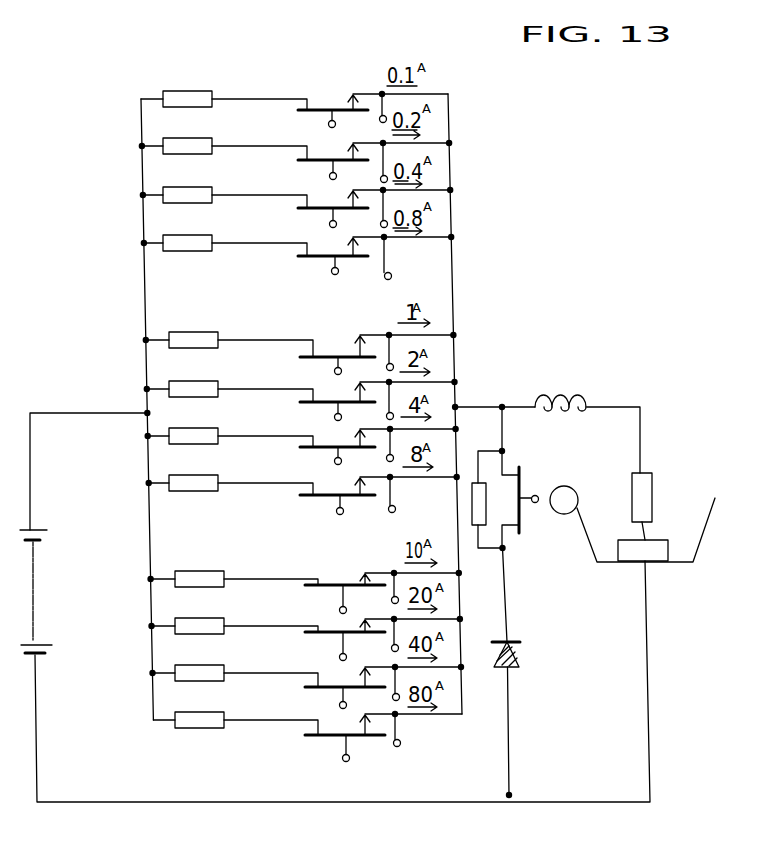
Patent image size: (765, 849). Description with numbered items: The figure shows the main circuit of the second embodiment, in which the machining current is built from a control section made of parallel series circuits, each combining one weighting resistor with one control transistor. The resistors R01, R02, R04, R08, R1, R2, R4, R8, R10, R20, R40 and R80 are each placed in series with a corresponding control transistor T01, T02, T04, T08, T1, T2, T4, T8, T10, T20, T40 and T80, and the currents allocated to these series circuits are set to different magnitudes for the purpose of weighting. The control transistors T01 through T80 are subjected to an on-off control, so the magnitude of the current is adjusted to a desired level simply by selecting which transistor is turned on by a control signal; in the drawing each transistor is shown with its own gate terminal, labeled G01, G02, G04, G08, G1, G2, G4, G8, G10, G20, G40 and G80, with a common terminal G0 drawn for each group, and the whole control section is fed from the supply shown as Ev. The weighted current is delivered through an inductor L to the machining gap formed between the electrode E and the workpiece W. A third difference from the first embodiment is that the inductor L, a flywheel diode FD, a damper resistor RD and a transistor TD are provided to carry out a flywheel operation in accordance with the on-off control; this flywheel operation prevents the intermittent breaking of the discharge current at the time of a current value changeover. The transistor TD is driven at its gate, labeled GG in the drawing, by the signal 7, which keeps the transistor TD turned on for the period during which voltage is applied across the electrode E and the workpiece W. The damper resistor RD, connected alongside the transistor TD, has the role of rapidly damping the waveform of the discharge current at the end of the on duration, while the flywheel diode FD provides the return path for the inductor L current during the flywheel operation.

The resistor R01 is at (187, 86).
The resistor R02 is at (187, 134).
The resistor R04 is at (187, 183).
The resistor R08 is at (187, 232).
The resistor R1 is at (193, 328).
The resistor R2 is at (193, 377).
The resistor R4 is at (193, 424).
The resistor R8 is at (193, 472).
The resistor R10 is at (199, 567).
The resistor R20 is at (199, 614).
The resistor R40 is at (199, 662).
The resistor R80 is at (199, 709).
The control transistor T01 is at (328, 90).
The control transistor T02 is at (322, 141).
The control transistor T04 is at (322, 189).
The control transistor T08 is at (322, 237).
The control transistor T1 is at (333, 335).
The control transistor T2 is at (333, 383).
The control transistor T4 is at (336, 429).
The control transistor T8 is at (336, 477).
The control transistor T10 is at (338, 568).
The control transistor T20 is at (336, 615).
The control transistor T40 is at (337, 667).
The control transistor T80 is at (337, 714).
The gate terminal G01 is at (348, 123).
The gate terminal G02 is at (354, 174).
The gate terminal G04 is at (354, 222).
The gate terminal G08 is at (355, 270).
The gate terminal G1 is at (353, 370).
The gate terminal G2 is at (355, 416).
The gate terminal G4 is at (355, 462).
The gate terminal G8 is at (357, 509).
The gate terminal G10 is at (361, 602).
The gate terminal G20 is at (362, 649).
The gate terminal G40 is at (363, 701).
The gate terminal G80 is at (368, 754).
The common gate terminal G0 is at (407, 512).
The voltage source Ev is at (42, 591).
The inductor L is at (554, 392).
The electrode E is at (651, 500).
The workpiece W is at (655, 555).
The signal 7 is at (564, 500).
The damper resistor RD is at (491, 504).
The transistor TD is at (522, 468).
The gate of TD GG is at (533, 512).
The flywheel diode FD is at (520, 666).